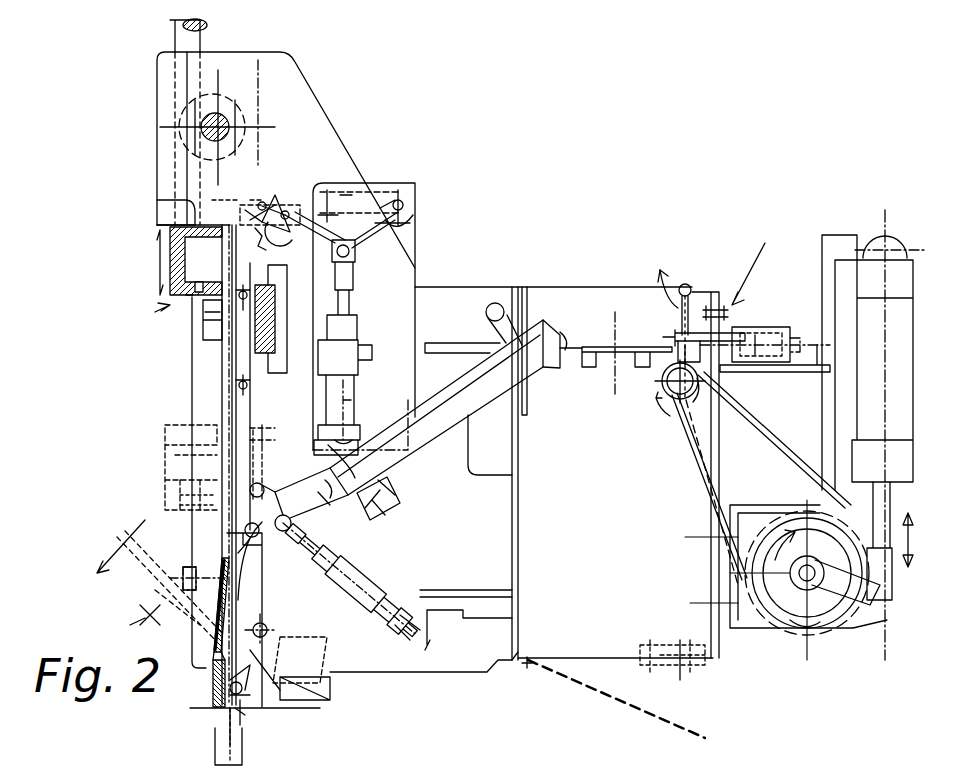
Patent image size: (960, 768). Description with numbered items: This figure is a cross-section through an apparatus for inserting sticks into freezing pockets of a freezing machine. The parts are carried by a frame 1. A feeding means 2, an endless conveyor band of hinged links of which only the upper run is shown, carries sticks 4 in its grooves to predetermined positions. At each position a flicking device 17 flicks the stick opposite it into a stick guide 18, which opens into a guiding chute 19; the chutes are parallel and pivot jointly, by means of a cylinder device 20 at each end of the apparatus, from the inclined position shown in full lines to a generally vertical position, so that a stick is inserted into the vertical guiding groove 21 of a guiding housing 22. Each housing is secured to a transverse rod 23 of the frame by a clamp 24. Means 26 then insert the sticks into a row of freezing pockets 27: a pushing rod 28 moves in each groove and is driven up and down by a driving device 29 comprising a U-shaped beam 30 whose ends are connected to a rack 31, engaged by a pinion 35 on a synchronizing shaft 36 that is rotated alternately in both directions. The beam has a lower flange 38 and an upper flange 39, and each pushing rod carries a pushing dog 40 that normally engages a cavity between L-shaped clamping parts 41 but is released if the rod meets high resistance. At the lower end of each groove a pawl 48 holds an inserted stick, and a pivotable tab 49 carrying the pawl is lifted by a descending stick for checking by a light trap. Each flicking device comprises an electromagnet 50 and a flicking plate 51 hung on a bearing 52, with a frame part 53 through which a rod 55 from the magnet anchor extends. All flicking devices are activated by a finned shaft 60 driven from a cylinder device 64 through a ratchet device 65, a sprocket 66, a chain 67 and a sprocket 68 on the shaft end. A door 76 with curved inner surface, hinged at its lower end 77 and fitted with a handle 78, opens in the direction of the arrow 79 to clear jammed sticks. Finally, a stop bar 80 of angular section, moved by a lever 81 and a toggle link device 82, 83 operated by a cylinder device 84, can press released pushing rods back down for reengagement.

The frame 1 is at (455, 288).
The feeding means 2 is at (608, 360).
The sticks 4 is at (571, 334).
The flicking device 17 is at (774, 363).
The stick guide 18 is at (438, 445).
The guiding chute 19 is at (335, 498).
The cylinder device 20 is at (362, 588).
The guiding groove 21 is at (250, 612).
The guiding housing 22 is at (258, 413).
The transverse rod 23 is at (268, 320).
The clamp 24 is at (285, 340).
The means for inserting sticks 26 is at (158, 310).
The freezing pocket 27 is at (240, 750).
The pushing rod 28 is at (222, 398).
The driving device 29 is at (150, 181).
The beam 30 is at (170, 275).
The rack 31 is at (203, 35).
The pinion 35 is at (220, 117).
The synchronizing shaft 36 is at (228, 122).
The lower flange 38 is at (198, 298).
The upper flange 39 is at (158, 208).
The pushing dog 40 is at (215, 320).
The clamping part 41 is at (198, 340).
The pawl 48 is at (212, 697).
The tab 49 is at (315, 705).
The electromagnet 50 is at (768, 328).
The flicking plate 51 is at (654, 278).
The bearing 52 is at (690, 283).
The frame part 53 is at (720, 300).
The rod 55 is at (678, 333).
The shaft 60 is at (665, 392).
The cylinder device 64 is at (900, 390).
The ratchet device 65 is at (822, 608).
The sprocket 66 is at (790, 645).
The chain 67 is at (700, 470).
The sprocket 68 is at (690, 430).
The door 76 is at (232, 585).
The lower end 77 is at (210, 657).
The handle 78 is at (192, 567).
The arrow 79 is at (120, 540).
The stop bar 80 is at (250, 205).
The lever 81 is at (285, 202).
The toggle link 82 is at (313, 190).
The toggle link 83 is at (405, 220).
The cylinder device 84 is at (355, 366).